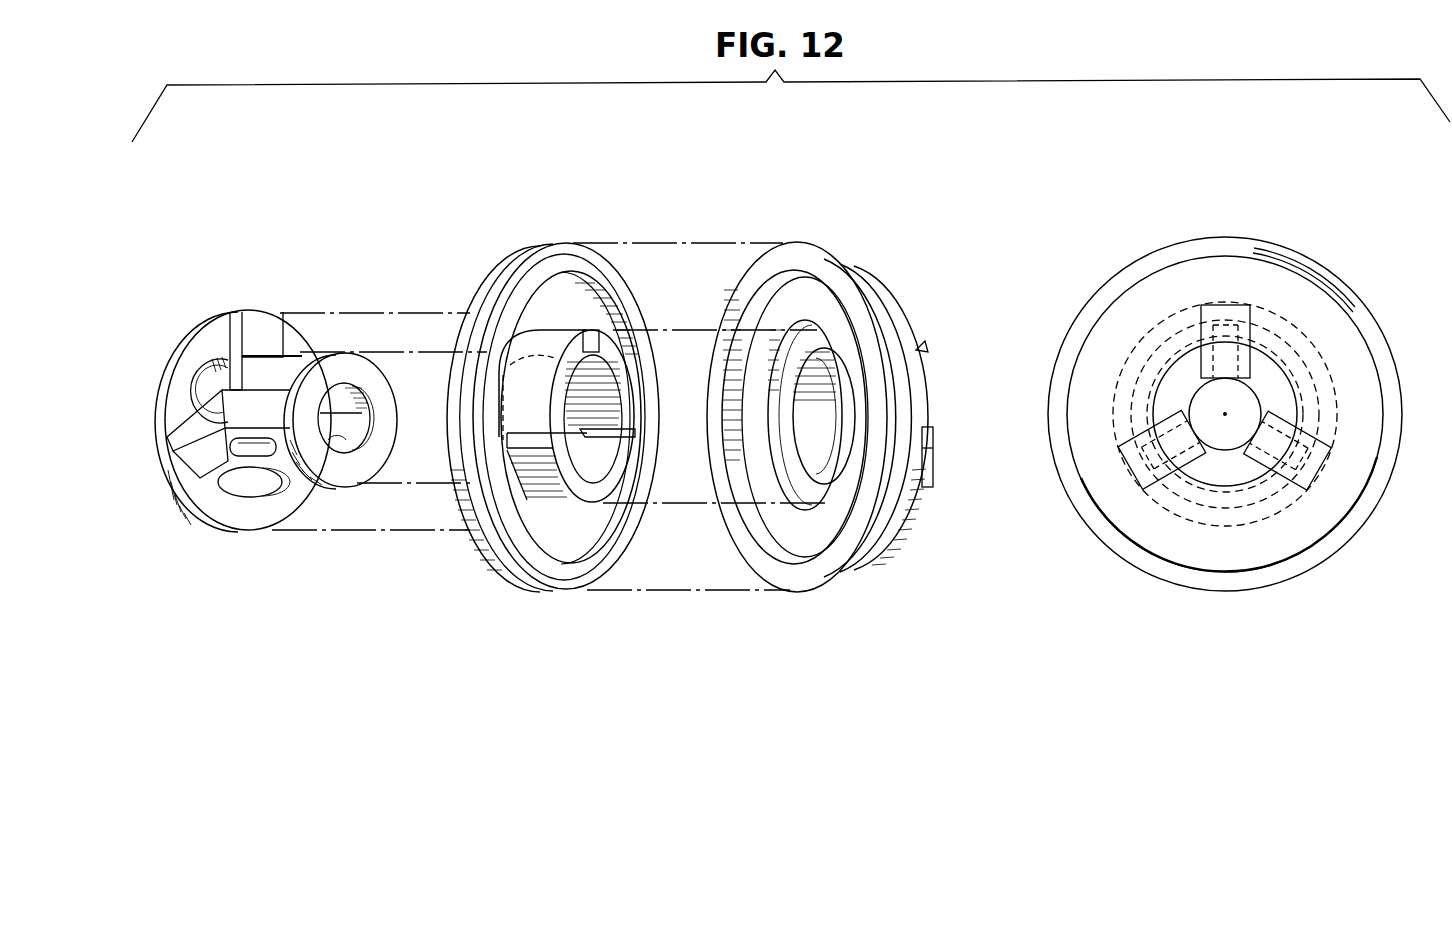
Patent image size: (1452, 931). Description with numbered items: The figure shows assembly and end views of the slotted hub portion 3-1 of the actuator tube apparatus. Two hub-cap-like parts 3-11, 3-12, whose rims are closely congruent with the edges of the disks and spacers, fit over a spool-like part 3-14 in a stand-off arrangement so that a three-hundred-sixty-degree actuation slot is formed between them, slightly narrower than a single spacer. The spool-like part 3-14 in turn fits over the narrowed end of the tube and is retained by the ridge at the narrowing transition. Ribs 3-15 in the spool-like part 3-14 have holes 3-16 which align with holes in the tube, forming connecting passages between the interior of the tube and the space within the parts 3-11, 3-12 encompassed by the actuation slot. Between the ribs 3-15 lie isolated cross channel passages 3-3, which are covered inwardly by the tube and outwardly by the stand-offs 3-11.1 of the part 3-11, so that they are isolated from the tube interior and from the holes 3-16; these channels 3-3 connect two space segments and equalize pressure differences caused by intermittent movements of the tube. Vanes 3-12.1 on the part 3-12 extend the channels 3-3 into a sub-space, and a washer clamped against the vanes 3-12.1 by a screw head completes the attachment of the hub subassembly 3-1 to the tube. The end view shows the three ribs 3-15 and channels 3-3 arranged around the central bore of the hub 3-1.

The slotted hub portion 3-1 is at (1141, 237).
The cross channel passages 3-3 is at (210, 406).
The hub-cap-like part 3-11 is at (590, 583).
The stand-offs 3-11.1 is at (565, 337).
The hub-cap-like part 3-12 is at (793, 575).
The vanes 3-12.1 is at (922, 345).
The spool-like part 3-14 is at (222, 507).
The ribs 3-15 is at (268, 365).
The holes 3-16 is at (255, 450).